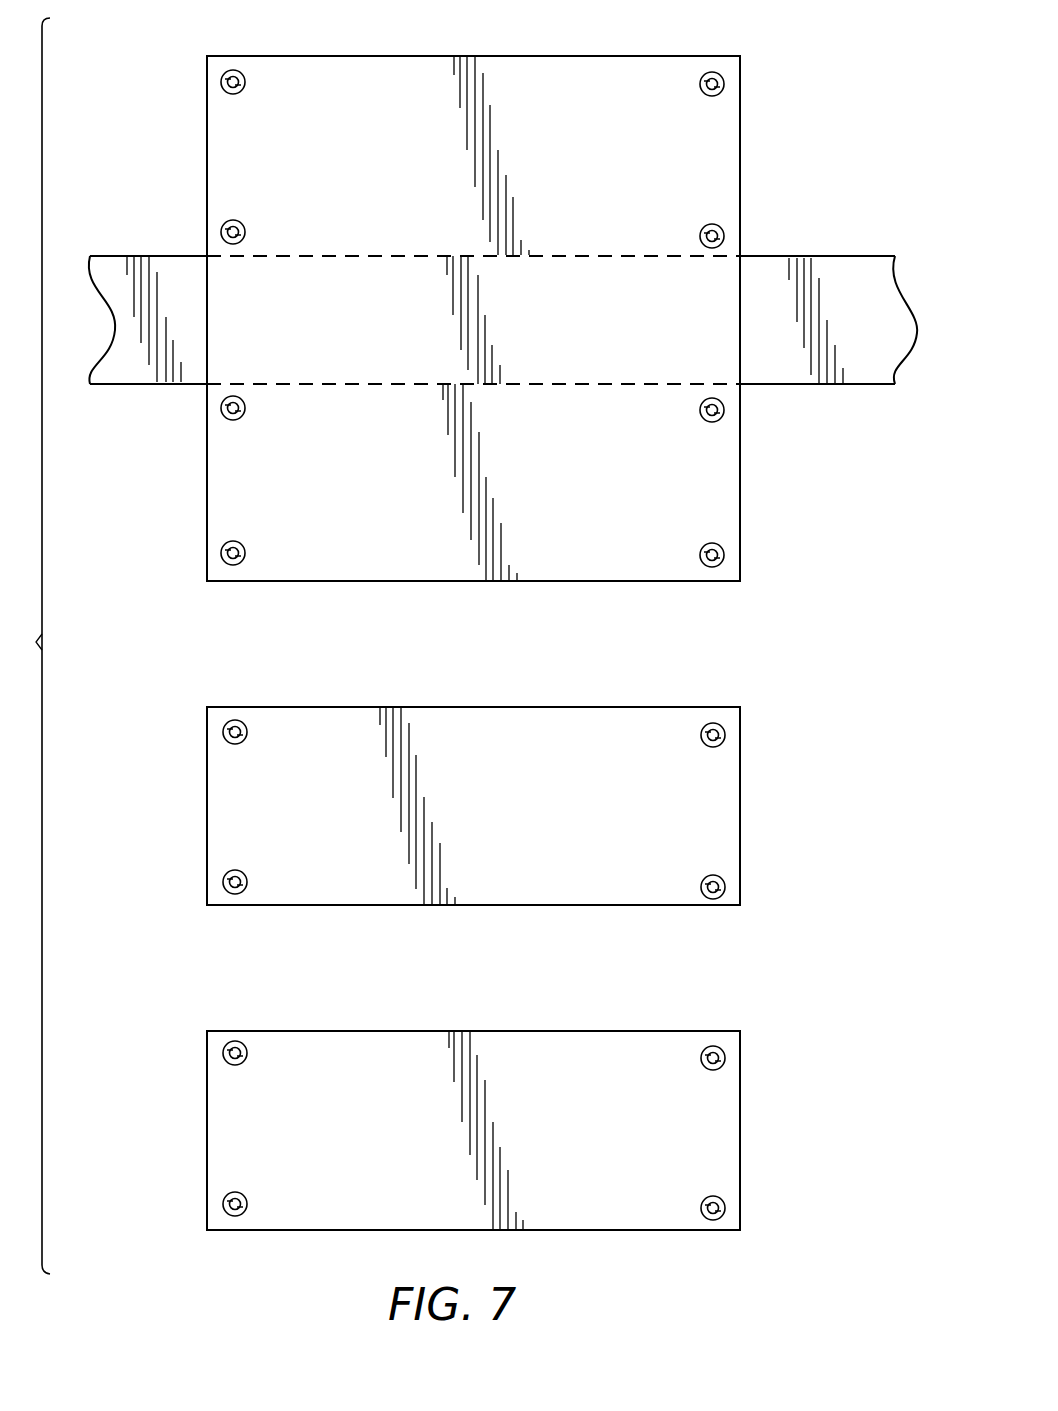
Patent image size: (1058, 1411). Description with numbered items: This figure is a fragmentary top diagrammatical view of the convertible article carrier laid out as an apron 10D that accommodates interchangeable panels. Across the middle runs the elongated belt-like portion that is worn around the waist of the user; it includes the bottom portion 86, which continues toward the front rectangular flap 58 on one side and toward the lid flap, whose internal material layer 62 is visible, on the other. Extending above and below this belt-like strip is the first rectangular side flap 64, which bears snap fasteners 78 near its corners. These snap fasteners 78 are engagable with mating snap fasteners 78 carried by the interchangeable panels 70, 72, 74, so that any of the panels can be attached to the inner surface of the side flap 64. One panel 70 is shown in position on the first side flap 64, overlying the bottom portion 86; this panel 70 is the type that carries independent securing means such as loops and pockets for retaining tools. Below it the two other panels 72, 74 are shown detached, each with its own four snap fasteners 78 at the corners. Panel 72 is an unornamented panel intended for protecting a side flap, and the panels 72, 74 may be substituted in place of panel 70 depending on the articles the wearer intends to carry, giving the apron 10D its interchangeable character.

The apron 10D is at (746, 60).
The interchangeable panel 70 is at (525, 68).
The interchangeable panel 72 is at (570, 722).
The interchangeable panel 74 is at (566, 1038).
The first rectangular side flap 64 is at (428, 570).
The bottom portion 86 is at (564, 338).
The internal material layer 62 is at (115, 262).
The front rectangular flap 58 is at (822, 268).
The snap fasteners 78 is at (722, 1199).